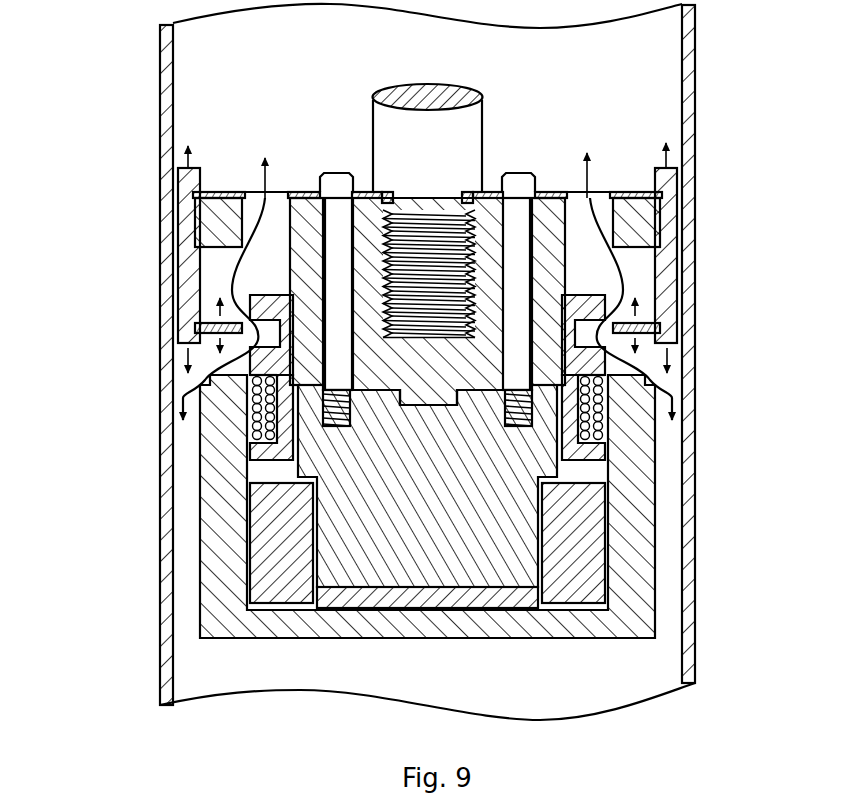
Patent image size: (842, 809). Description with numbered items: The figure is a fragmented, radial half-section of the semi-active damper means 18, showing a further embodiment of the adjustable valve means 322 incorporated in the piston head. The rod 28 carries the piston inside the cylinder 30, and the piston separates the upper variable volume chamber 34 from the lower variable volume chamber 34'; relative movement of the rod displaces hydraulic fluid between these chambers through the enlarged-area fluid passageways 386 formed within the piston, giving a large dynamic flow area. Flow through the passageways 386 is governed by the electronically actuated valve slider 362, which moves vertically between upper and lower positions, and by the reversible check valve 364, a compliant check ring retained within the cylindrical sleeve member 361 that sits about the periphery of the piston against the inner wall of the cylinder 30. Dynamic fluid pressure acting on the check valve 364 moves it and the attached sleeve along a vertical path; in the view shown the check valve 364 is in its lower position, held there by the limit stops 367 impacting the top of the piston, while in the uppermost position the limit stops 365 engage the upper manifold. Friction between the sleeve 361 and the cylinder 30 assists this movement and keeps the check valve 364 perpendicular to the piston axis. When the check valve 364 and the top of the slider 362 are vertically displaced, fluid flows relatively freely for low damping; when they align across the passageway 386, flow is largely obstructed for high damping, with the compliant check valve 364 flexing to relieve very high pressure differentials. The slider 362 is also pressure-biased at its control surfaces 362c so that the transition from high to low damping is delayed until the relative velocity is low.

The semi-active damper means 18 is at (148, 87).
The cylinder 30 is at (696, 38).
The variable volume chamber 34 is at (415, 46).
The variable volume chamber 34' is at (420, 674).
The rod 28 is at (441, 158).
The limit stops 367 is at (218, 193).
The limit stops 365 is at (197, 298).
The cylindrical sleeve member 361 is at (667, 252).
The reversible check valve 364 is at (220, 328).
The valve slider 362 is at (640, 357).
The control surfaces 362c is at (243, 303).
The fluid passageways 386 is at (240, 280).
The adjustable valve means 322 is at (190, 527).